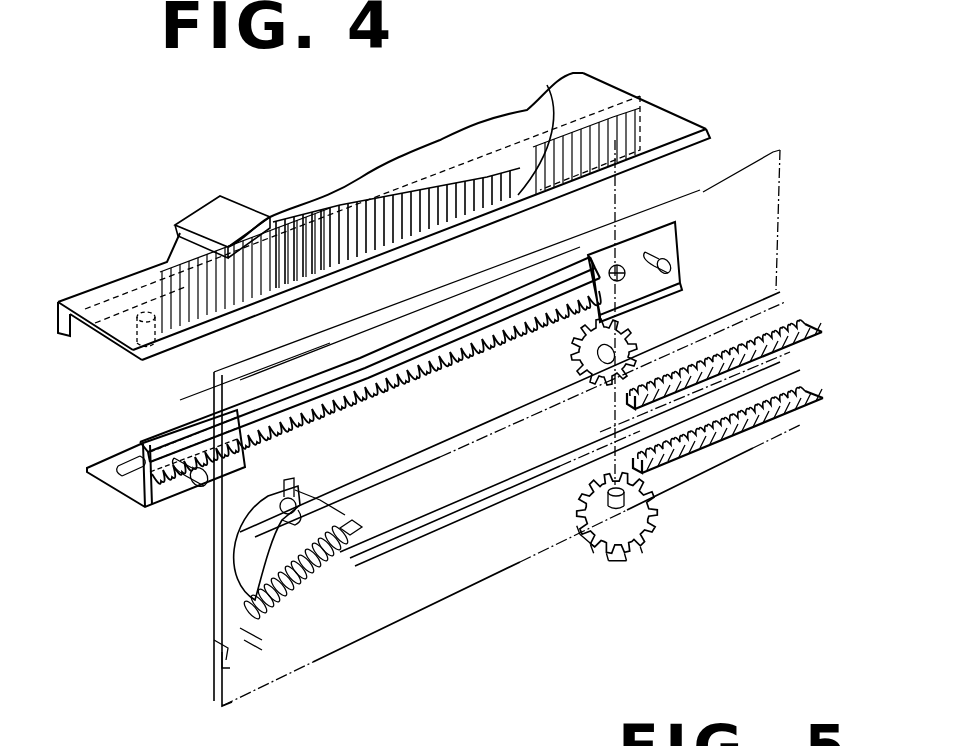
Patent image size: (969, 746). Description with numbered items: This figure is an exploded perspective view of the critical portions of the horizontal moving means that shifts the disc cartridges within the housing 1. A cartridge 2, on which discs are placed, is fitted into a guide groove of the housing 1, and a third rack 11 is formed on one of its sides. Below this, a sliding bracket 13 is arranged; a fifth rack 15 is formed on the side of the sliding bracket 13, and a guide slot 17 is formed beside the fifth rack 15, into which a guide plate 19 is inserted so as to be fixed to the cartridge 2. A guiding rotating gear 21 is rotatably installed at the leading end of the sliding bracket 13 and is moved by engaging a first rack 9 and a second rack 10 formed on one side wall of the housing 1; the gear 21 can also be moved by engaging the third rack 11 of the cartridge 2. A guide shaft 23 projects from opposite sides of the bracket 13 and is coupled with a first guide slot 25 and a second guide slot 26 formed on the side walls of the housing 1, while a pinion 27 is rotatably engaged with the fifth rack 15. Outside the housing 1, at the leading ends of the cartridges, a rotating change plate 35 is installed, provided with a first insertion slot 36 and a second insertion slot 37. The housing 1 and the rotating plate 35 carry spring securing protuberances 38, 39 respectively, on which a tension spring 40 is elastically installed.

The housing 1 is at (400, 588).
The cartridge 2 is at (137, 295).
The first rack 9 is at (798, 322).
The second rack 10 is at (703, 444).
The third rack 11 is at (416, 240).
The sliding bracket 13 is at (103, 483).
The fifth rack 15 is at (397, 388).
The guide slot 17 is at (506, 300).
The guide plate 19 is at (137, 340).
The guiding rotating gear 21 is at (640, 520).
The guide shaft 23 is at (190, 492).
The first guide slot 25 is at (495, 432).
The second guide slot 26 is at (447, 513).
The pinion 27 is at (628, 342).
The rotating change plate 35 is at (247, 587).
The first insertion slot 36 is at (288, 494).
The second insertion slot 37 is at (313, 597).
The spring securing protuberance 38 is at (352, 528).
The spring securing protuberance 39 is at (222, 642).
The tension spring 40 is at (258, 645).